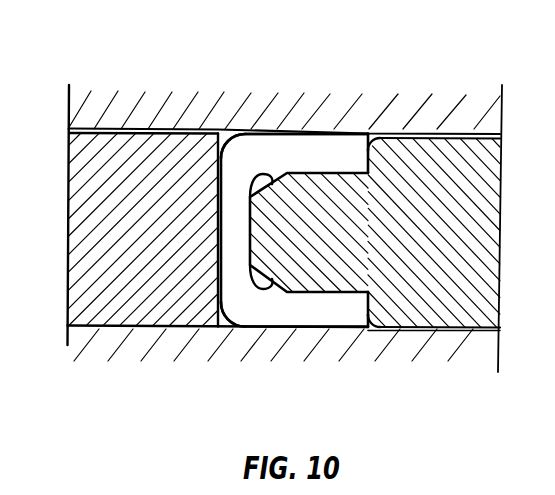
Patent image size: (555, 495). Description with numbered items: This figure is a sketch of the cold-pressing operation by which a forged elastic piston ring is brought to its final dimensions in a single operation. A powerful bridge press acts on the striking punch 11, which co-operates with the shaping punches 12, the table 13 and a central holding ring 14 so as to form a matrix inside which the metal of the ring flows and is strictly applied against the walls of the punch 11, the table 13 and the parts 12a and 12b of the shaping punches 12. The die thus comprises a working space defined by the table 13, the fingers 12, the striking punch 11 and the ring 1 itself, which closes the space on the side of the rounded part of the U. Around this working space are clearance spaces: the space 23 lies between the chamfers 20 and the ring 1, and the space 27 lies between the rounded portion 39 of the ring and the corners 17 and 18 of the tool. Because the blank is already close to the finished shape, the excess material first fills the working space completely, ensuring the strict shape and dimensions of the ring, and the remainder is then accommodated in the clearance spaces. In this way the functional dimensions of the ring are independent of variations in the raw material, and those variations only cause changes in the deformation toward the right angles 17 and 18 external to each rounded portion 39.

The ring 1 is at (218, 228).
The striking punch 11 is at (313, 113).
The shaping punches 12 is at (376, 225).
The part of shaping punch 12a is at (392, 143).
The part of shaping punch 12b is at (330, 171).
The table 13 is at (87, 346).
The central holding ring 14 is at (95, 195).
The corner of the tool 17 is at (218, 328).
The corner of the tool 18 is at (221, 140).
The chamfers 20 is at (260, 284).
The clearance space 23 is at (260, 175).
The clearance space 27 is at (245, 150).
The rounded portion 39 is at (262, 158).